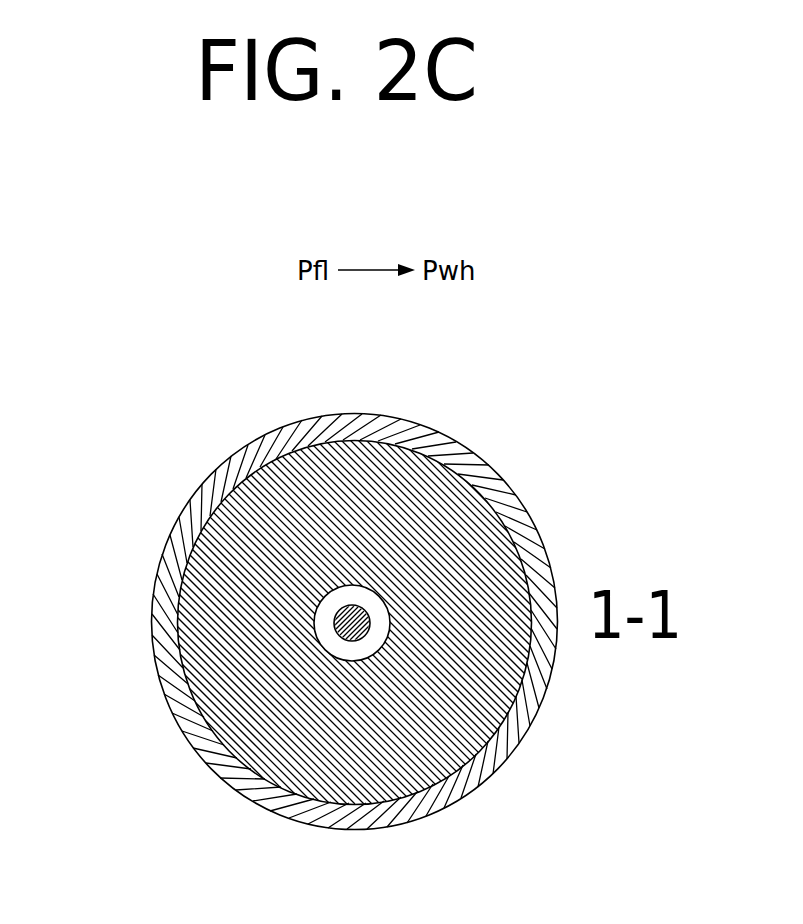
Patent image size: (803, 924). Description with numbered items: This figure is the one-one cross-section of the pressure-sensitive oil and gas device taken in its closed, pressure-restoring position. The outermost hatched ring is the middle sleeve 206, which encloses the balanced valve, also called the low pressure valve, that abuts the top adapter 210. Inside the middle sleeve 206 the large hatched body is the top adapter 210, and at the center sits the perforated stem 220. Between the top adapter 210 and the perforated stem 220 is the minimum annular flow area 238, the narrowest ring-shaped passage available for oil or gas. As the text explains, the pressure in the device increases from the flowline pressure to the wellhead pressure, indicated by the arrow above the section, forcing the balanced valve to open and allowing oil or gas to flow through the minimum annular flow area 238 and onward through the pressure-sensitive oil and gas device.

The middle sleeve 206 is at (150, 647).
The top adapter 210 is at (277, 573).
The perforated stem 220 is at (380, 589).
The minimum annular flow area 238 is at (350, 586).